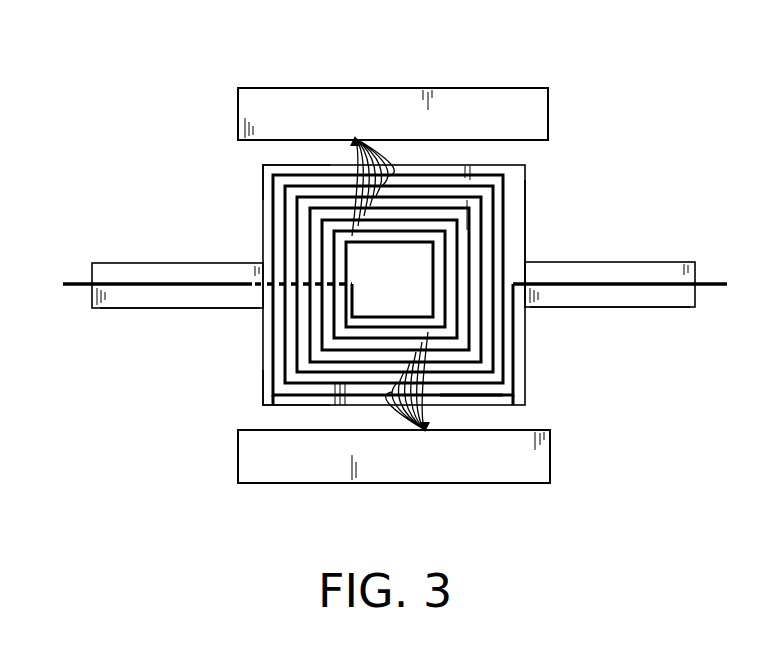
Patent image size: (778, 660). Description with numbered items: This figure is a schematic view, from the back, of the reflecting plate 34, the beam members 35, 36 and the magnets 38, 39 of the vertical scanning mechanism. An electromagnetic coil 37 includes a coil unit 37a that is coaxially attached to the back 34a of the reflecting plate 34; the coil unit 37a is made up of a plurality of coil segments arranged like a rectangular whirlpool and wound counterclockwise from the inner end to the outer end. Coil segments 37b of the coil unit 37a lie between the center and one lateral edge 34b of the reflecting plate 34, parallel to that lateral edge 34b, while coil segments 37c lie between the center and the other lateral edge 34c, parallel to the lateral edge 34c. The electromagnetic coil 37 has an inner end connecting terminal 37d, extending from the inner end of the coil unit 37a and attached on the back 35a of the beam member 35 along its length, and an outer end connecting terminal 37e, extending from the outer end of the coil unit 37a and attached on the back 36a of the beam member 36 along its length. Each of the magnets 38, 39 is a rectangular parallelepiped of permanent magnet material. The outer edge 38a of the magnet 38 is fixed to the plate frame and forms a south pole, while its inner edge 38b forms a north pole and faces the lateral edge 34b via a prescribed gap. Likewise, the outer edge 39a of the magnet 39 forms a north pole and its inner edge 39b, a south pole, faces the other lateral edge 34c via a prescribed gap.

The reflecting plate 34 is at (528, 185).
The back of the reflecting plate 34a is at (517, 237).
The lateral edge of the reflecting plate 34b is at (265, 165).
The other lateral edge of the reflecting plate 34c is at (272, 407).
The beam member 35 is at (210, 255).
The back of the beam member 35a is at (153, 300).
The beam member 36 is at (663, 255).
The back of the beam member 36a is at (637, 298).
The electromagnetic coil 37 is at (270, 342).
The coil unit 37a is at (463, 380).
The coil segments 37b is at (359, 173).
The coil segments 37c is at (420, 402).
The inner end connecting terminal 37d is at (125, 284).
The outer end connecting terminal 37e is at (558, 287).
The magnet 38 is at (410, 78).
The outer edge of the magnet 38a is at (497, 88).
The inner edge of the magnet 38b is at (536, 138).
The magnet 39 is at (313, 494).
The outer edge of the magnet 39a is at (468, 484).
The inner edge of the magnet 39b is at (530, 432).